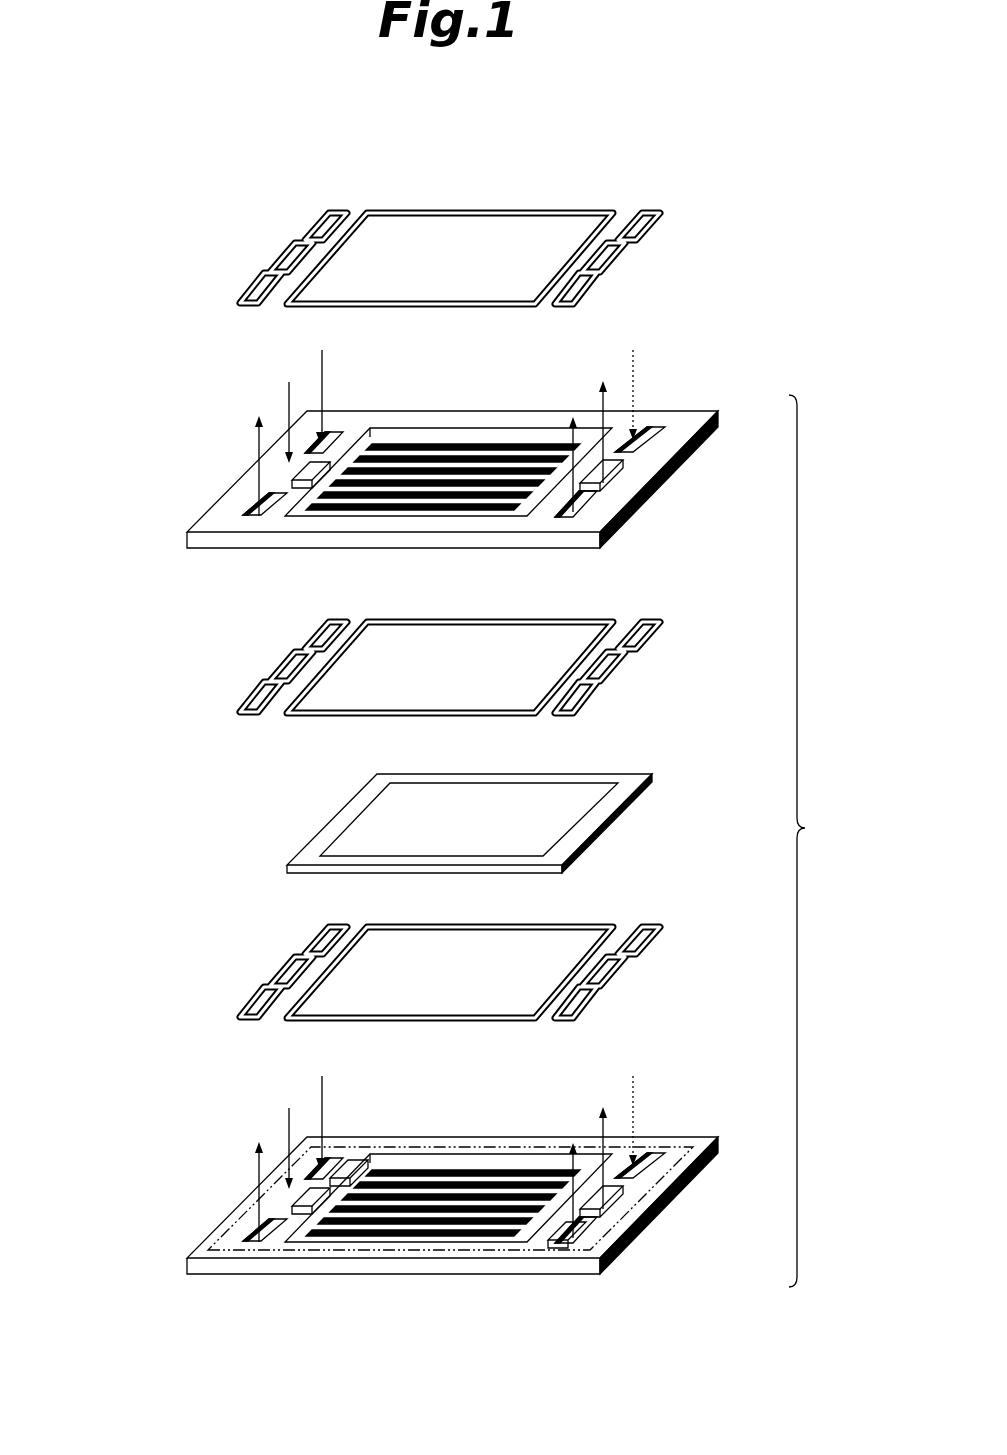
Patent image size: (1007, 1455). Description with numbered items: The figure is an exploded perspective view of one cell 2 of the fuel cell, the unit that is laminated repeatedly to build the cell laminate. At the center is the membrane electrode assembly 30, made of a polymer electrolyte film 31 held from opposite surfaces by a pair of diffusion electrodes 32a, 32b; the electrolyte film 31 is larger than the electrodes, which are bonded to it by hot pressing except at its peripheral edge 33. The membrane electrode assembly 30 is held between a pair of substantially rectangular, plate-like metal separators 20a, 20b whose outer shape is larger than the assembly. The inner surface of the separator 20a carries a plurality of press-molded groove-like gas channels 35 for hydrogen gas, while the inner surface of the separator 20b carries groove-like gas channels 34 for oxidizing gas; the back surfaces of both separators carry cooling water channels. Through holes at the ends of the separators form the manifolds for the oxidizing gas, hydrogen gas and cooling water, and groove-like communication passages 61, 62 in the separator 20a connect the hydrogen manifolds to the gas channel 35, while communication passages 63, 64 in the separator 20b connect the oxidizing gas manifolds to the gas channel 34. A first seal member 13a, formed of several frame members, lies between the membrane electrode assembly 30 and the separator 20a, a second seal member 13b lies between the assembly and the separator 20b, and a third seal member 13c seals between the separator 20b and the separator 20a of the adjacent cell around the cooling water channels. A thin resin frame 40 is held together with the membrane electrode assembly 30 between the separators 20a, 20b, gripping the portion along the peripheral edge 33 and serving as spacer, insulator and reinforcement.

The cell 2 is at (809, 841).
The first seal member 13a is at (255, 975).
The second seal member 13b is at (262, 651).
The third seal member 13c is at (268, 208).
The separator 20a is at (416, 1204).
The separator 20b is at (424, 469).
The membrane electrode assembly 30 is at (423, 836).
The polymer electrolyte film 31 is at (305, 855).
The anode-side diffusion electrode 32a is at (320, 873).
The cathode-side diffusion electrode 32b is at (340, 828).
The peripheral edge 33 is at (607, 800).
The gas channel of the oxidizing gas 34 is at (303, 548).
The gas channel of the hydrogen gas 35 is at (445, 1213).
The resin frame 40 is at (345, 1252).
The inlet-side communication passage 61 is at (552, 1245).
The outlet-side communication passage 62 is at (312, 1178).
The inlet-side communication passage 63 is at (285, 522).
The outlet-side communication passage 64 is at (622, 440).